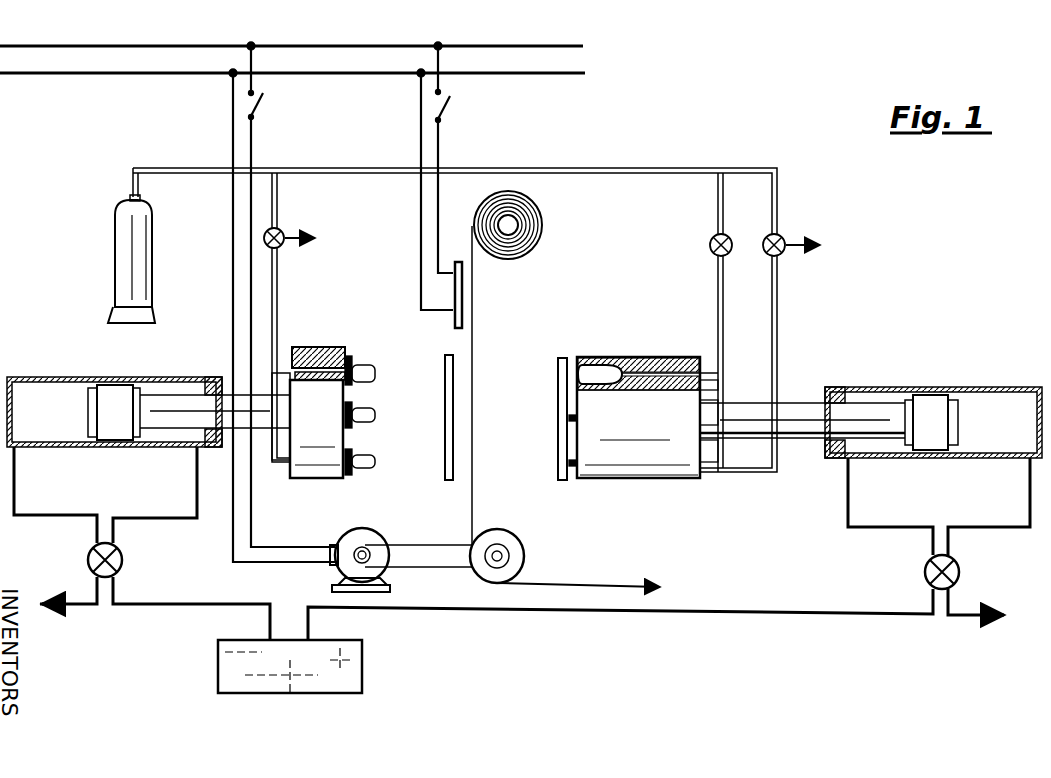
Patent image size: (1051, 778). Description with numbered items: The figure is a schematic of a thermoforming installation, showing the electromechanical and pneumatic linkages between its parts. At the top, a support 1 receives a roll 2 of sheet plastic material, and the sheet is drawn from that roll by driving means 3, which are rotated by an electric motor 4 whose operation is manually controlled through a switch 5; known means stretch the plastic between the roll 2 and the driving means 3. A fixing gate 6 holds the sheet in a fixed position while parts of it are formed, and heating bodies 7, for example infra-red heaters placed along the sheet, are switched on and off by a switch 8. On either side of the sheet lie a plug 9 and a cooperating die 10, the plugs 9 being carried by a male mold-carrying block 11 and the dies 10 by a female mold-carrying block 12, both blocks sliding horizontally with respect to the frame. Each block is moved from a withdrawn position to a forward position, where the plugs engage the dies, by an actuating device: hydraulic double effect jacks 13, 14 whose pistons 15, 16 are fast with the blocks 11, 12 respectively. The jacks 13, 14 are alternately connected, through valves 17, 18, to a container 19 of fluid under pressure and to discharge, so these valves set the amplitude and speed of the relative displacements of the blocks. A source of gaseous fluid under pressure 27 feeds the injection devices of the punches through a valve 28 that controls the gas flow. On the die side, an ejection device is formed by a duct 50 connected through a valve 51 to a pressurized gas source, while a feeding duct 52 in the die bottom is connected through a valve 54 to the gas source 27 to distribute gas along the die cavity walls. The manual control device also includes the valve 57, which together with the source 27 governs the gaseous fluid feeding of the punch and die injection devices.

The support 1 is at (518, 224).
The roll 2 is at (538, 244).
The driving means 3 is at (525, 572).
The electric motor 4 is at (382, 537).
The switch 5 is at (258, 100).
The fixing gate 6 is at (444, 450).
The heating bodies 7 is at (453, 327).
The switch 8 is at (445, 103).
The plug 9 is at (377, 372).
The die 10 is at (606, 364).
The male mold-carrying block 11 is at (308, 412).
The female mold-carrying block 12 is at (647, 417).
The hydraulic double effect jack 13 is at (114, 460).
The hydraulic double effect jack 14 is at (933, 471).
The piston 15 is at (189, 412).
The piston 16 is at (829, 422).
The valve 17 is at (122, 565).
The valve 18 is at (960, 573).
The container of fluid under pressure 19 is at (290, 666).
The source of gaseous fluid under pressure 27 is at (152, 245).
The valve 28 is at (280, 248).
The duct 50 is at (680, 360).
The valve 51 is at (709, 245).
The feeding duct 52 is at (652, 394).
The valve 54 is at (556, 462).
The valve 57 is at (783, 232).